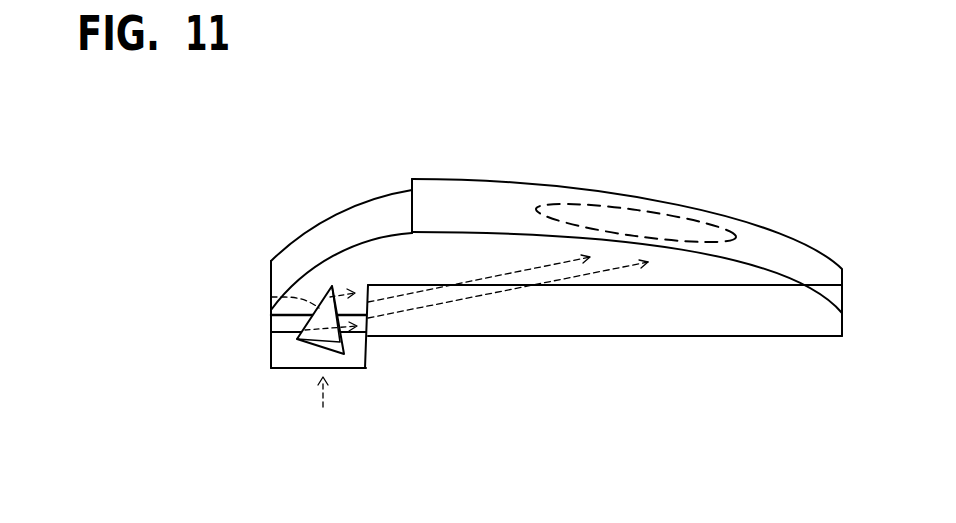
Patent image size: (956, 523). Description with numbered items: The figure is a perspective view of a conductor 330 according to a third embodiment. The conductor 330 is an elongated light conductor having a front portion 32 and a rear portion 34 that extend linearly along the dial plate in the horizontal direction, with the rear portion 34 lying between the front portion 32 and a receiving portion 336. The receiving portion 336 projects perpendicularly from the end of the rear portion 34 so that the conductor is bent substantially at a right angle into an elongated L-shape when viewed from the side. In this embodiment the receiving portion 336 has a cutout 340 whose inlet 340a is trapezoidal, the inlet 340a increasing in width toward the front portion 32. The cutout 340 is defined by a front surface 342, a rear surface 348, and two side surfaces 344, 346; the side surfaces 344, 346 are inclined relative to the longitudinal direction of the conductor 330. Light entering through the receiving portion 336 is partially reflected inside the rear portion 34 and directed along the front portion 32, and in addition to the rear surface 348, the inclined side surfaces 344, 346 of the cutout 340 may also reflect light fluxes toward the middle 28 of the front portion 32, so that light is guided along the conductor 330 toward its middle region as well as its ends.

The rear portion 34 is at (340, 175).
The front portion 32 is at (635, 180).
The conductor 330 is at (585, 122).
The middle 28 is at (670, 217).
The cutout 340 is at (287, 275).
The inlet 340a is at (327, 350).
The front surface 342 is at (353, 340).
The side surface 344 is at (313, 343).
The side surface 346 is at (271, 297).
The rear surface 348 is at (271, 332).
The receiving portion 336 is at (305, 413).